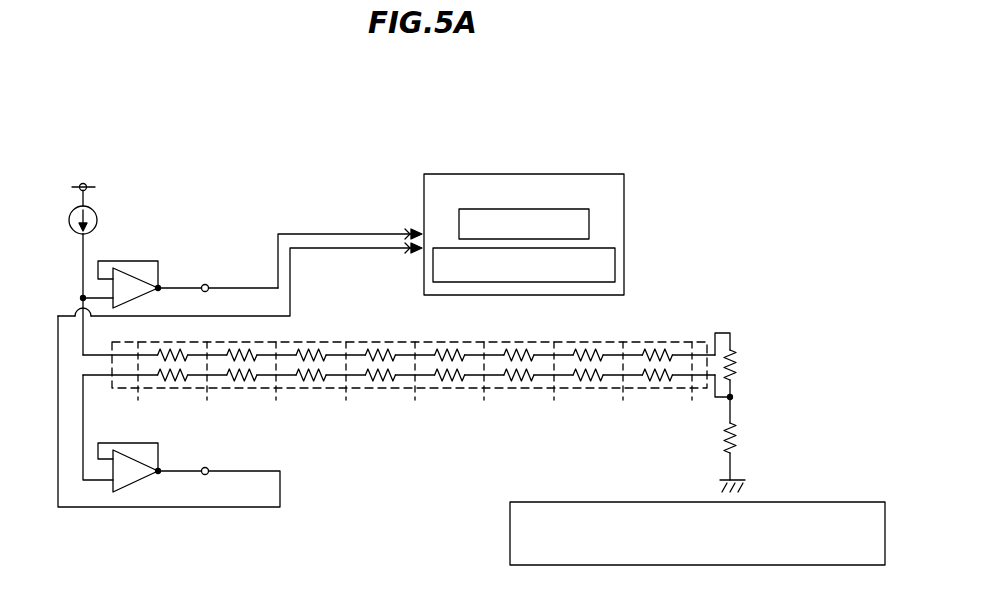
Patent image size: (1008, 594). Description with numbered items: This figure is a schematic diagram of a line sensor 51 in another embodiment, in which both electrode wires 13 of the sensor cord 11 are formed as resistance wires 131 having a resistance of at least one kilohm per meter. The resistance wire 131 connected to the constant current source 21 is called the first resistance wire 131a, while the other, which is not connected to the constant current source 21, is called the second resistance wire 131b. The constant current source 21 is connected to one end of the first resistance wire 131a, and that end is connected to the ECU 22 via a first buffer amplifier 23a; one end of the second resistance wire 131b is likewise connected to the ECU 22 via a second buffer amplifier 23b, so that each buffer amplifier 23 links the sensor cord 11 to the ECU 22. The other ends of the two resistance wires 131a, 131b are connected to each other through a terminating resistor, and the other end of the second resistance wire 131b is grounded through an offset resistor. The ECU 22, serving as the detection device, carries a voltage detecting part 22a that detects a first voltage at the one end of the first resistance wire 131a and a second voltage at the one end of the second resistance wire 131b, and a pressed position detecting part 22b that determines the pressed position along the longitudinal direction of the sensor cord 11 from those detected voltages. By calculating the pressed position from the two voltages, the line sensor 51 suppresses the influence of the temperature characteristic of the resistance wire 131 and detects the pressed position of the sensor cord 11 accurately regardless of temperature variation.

The line sensor 51 is at (361, 128).
The constant current source 21 is at (97, 208).
The operational amplifier (voltage follower) 23 is at (135, 267).
The first buffer amplifier 23a is at (122, 290).
The second buffer amplifier 23b is at (133, 475).
The ECU 22 is at (623, 175).
The voltage detecting part 22a is at (590, 223).
The pressed position detecting part 22b is at (615, 265).
The sensor cord 11 is at (676, 326).
The electrode wire 13 is at (688, 366).
The resistance wire 131 is at (542, 368).
The first resistance wire 131a is at (357, 354).
The second resistance wire 131b is at (402, 376).